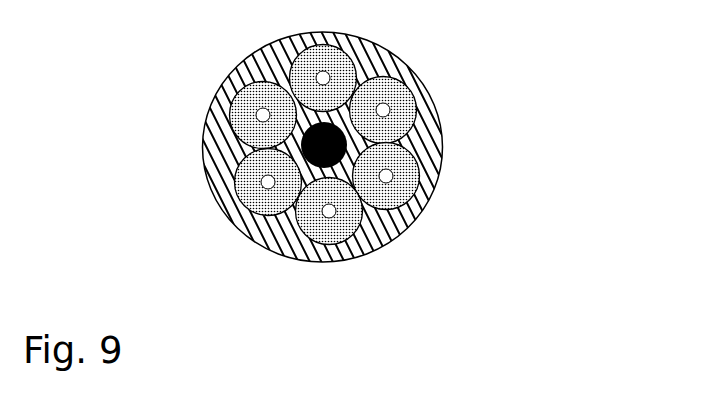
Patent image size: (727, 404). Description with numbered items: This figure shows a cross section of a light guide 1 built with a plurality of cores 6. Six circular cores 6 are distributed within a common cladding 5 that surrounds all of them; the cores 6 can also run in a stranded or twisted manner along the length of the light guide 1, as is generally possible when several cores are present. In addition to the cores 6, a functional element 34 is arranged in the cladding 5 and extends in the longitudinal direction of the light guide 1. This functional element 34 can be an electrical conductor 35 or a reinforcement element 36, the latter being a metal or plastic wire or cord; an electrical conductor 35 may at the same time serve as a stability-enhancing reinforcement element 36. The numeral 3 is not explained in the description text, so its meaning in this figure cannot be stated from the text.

The light guide 1 is at (165, 108).
The optical fiber unit 3 is at (248, 214).
The cladding 5 is at (202, 160).
The core 6 is at (322, 261).
The functional element 34 is at (405, 127).
The electrical conductor 35 is at (323, 78).
The reinforcement element 36 is at (386, 176).